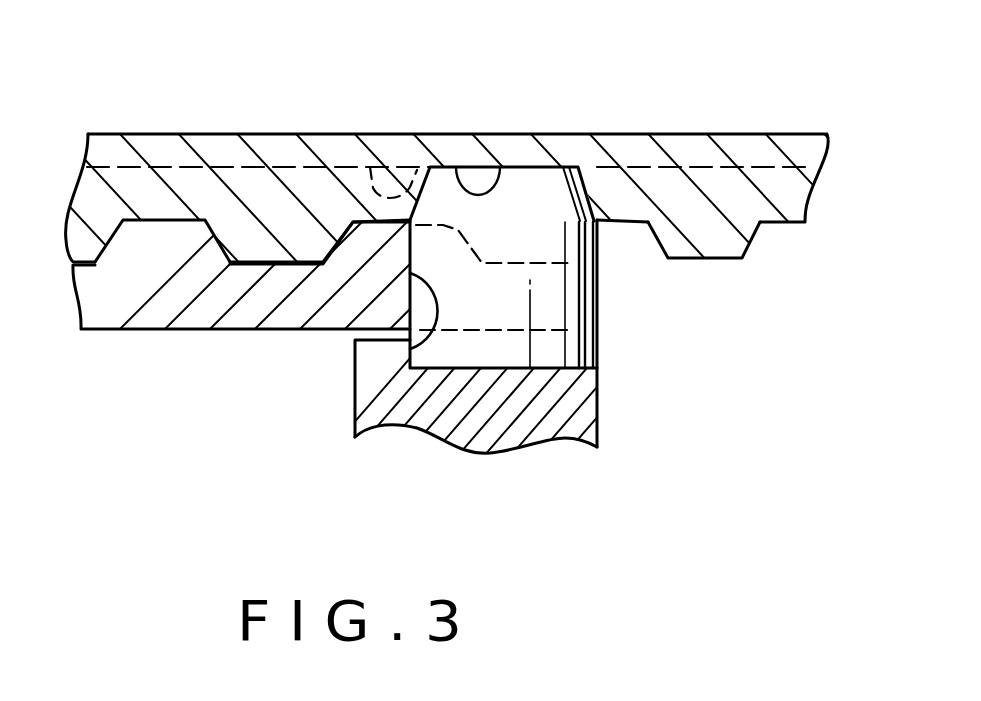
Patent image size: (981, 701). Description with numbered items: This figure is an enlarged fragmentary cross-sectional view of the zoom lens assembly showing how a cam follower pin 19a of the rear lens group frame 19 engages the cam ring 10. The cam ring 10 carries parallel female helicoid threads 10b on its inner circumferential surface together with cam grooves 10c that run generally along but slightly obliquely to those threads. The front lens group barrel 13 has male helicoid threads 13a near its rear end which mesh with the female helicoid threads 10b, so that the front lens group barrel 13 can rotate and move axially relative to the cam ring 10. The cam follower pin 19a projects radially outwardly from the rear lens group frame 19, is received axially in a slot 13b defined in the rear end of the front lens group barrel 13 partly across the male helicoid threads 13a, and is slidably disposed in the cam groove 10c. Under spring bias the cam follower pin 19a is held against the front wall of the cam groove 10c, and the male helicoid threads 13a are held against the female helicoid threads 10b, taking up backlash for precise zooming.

The cam ring 10 is at (677, 134).
The female helicoid threads 10b is at (723, 235).
The cam groove 10c is at (450, 172).
The front lens group barrel 13 is at (145, 308).
The male helicoid threads 13a is at (160, 243).
The axially opening slot 13b is at (427, 338).
The rear lens group frame 19 is at (592, 413).
The cam follower pin 19a is at (597, 302).